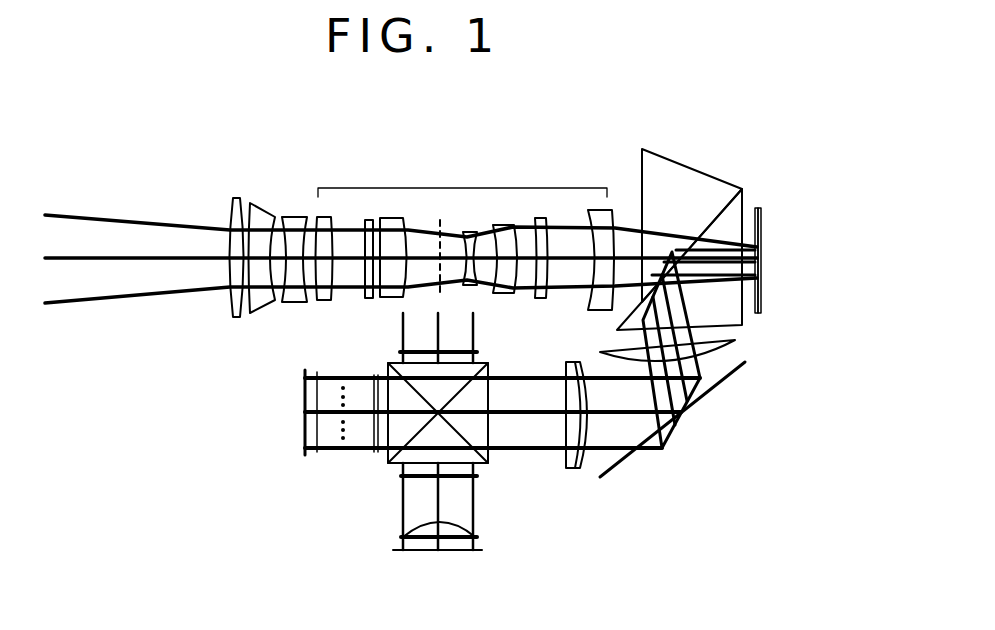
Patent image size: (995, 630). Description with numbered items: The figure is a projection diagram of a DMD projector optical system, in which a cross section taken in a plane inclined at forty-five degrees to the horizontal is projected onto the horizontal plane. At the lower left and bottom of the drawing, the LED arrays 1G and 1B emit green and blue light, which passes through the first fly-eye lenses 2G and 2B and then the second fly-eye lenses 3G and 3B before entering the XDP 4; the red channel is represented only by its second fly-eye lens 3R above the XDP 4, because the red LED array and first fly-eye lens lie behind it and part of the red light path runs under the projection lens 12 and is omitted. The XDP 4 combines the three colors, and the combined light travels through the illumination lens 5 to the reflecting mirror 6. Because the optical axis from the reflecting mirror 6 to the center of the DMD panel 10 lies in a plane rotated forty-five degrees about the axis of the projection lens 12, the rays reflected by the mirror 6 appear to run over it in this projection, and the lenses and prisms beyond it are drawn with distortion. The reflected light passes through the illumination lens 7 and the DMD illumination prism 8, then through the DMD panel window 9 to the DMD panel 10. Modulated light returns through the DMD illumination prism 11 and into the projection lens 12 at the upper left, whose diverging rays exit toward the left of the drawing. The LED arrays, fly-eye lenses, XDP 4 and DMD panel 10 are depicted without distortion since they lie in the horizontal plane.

The LED array 1B is at (477, 552).
The first fly-eye lens 2B is at (477, 535).
The second fly-eye lens 3B is at (477, 477).
The LED array 1G is at (307, 455).
The first fly-eye lens 2G is at (315, 455).
The second fly-eye lens 3G is at (373, 452).
The second fly-eye lens 3R is at (400, 352).
The XDP 4 is at (488, 462).
The illumination lens 5 is at (562, 471).
The reflecting mirror 6 is at (698, 400).
The illumination lens 7 is at (720, 343).
The DMD illumination prism 8 is at (743, 323).
The DMD panel window 9 is at (762, 305).
The DMD panel 10 is at (762, 223).
The DMD illumination prism 11 is at (673, 160).
The projection lens 12 is at (418, 186).